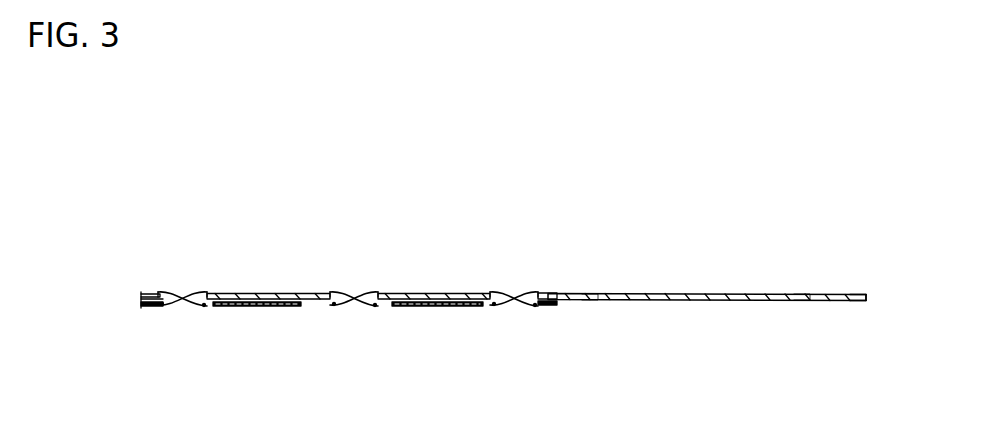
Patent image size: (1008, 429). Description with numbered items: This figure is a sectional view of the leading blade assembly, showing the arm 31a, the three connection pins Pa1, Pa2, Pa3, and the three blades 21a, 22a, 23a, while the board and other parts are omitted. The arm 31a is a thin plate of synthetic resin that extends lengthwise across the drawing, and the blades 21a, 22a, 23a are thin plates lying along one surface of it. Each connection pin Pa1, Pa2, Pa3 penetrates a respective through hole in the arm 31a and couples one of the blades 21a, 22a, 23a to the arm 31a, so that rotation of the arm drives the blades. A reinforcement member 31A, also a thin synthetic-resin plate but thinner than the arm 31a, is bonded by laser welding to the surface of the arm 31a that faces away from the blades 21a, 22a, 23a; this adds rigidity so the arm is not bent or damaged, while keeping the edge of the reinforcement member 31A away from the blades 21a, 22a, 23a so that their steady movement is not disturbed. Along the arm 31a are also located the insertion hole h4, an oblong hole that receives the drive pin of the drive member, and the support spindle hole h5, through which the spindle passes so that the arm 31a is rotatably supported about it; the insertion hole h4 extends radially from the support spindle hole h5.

The connection pin Pa1 is at (203, 292).
The connection pin Pa2 is at (377, 292).
The connection pin Pa3 is at (536, 292).
The reinforcement member 31A is at (559, 293).
The arm 31a is at (853, 293).
The blade 21a is at (148, 305).
The blade 22a is at (322, 307).
The blade 23a is at (482, 307).
The insertion hole h4 is at (590, 301).
The support spindle hole h5 is at (802, 301).